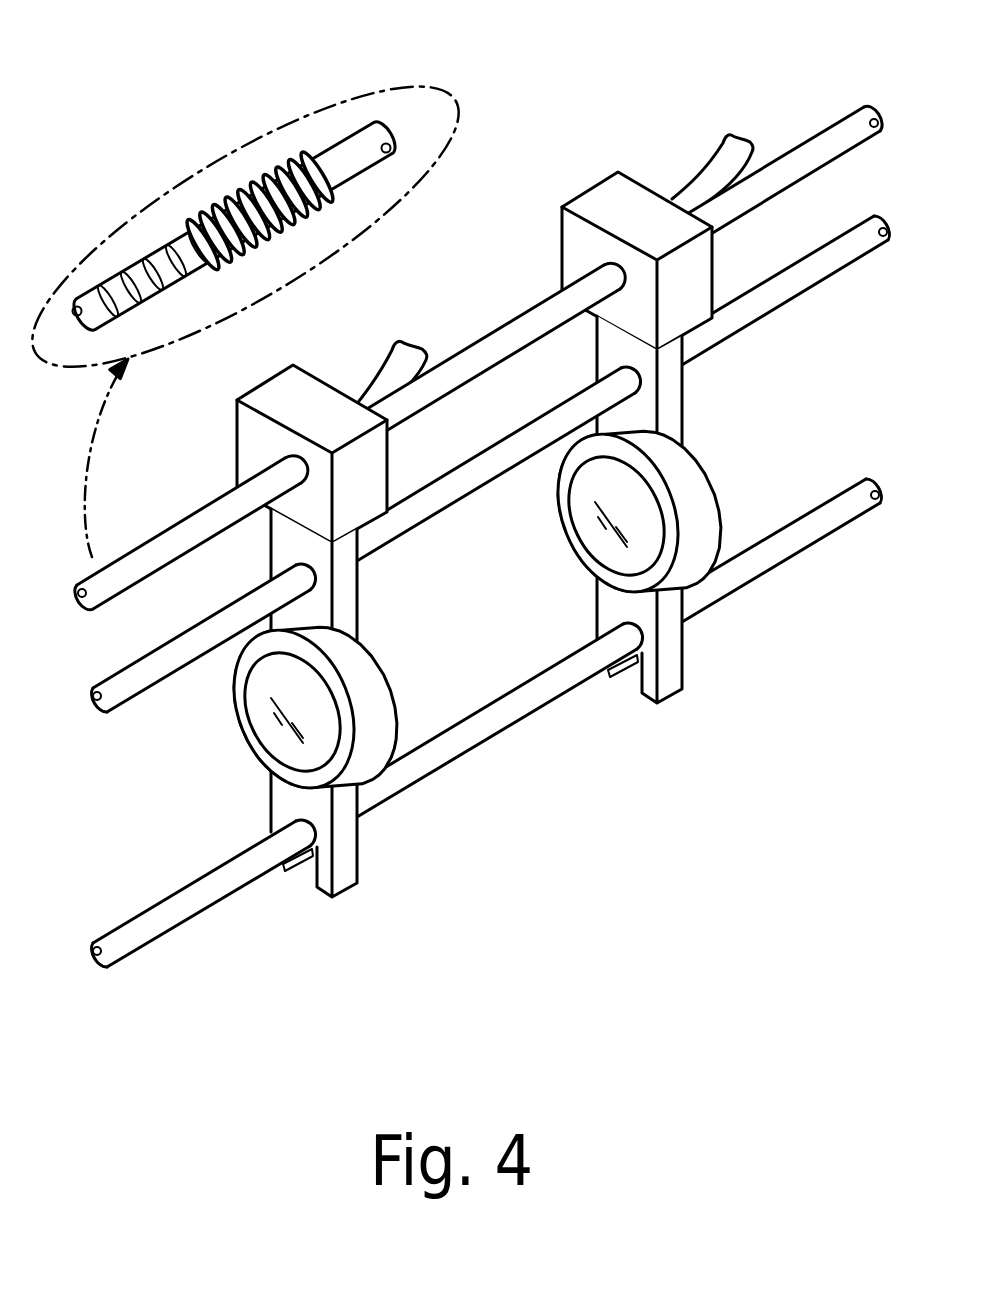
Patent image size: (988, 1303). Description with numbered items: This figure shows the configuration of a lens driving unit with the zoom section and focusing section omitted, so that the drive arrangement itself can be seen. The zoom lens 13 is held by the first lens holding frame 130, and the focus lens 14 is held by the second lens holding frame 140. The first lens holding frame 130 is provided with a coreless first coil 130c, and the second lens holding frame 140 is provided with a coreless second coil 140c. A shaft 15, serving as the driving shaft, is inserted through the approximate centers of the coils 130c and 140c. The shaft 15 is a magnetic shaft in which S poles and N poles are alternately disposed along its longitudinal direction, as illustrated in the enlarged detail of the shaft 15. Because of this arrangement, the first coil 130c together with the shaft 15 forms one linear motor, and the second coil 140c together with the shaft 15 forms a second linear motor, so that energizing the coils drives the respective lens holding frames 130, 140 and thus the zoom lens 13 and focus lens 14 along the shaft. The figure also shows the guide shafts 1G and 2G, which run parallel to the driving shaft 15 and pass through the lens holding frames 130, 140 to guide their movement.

The shaft 15 is at (343, 160).
The first coil 130c is at (625, 207).
The second coil 140c is at (305, 398).
The guide shaft 1G is at (780, 288).
The guide shaft 2G is at (810, 532).
The first lens holding frame 130 is at (703, 500).
The second lens holding frame 140 is at (372, 709).
The zoom lens 13 is at (592, 487).
The focus lens 14 is at (267, 688).